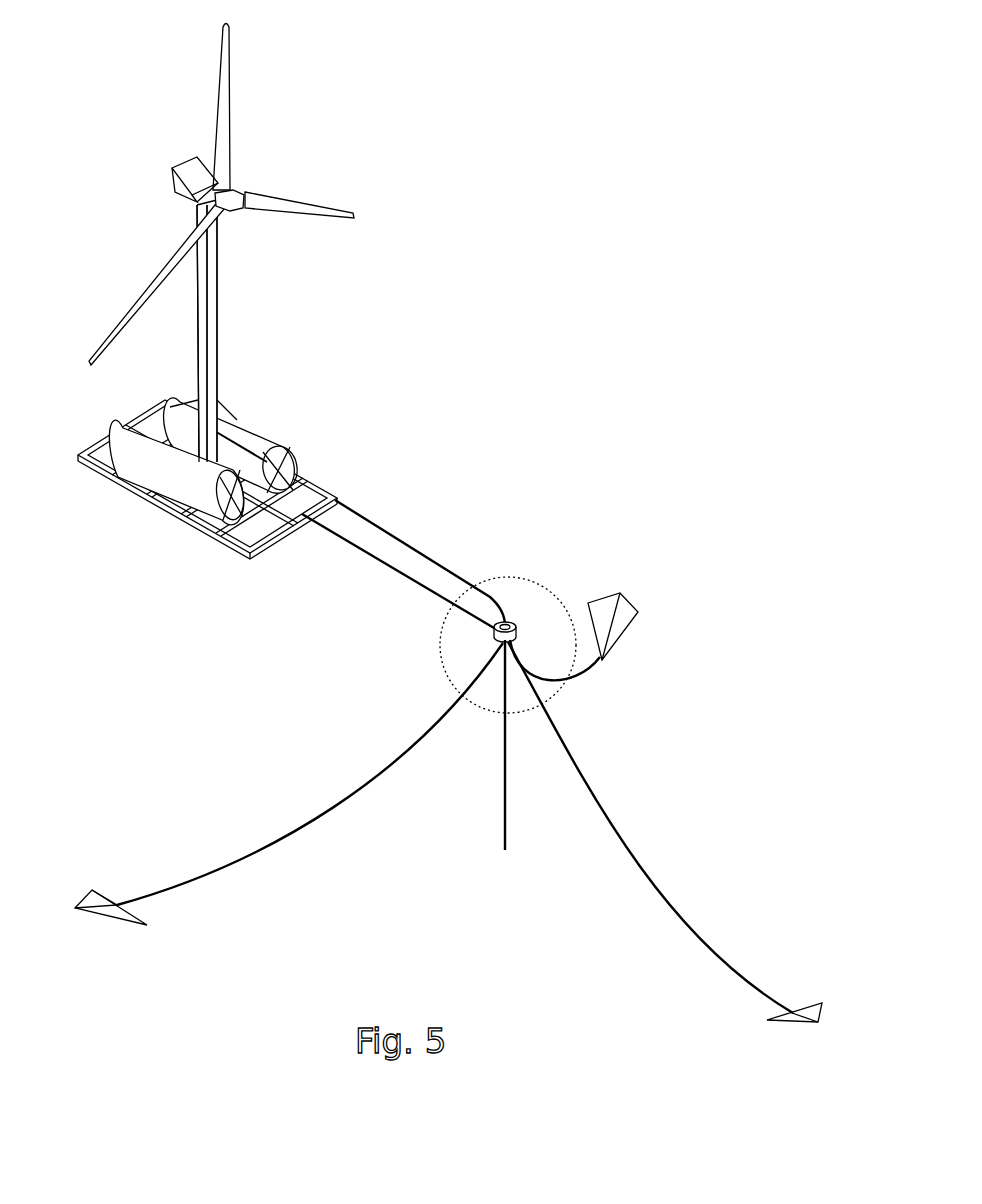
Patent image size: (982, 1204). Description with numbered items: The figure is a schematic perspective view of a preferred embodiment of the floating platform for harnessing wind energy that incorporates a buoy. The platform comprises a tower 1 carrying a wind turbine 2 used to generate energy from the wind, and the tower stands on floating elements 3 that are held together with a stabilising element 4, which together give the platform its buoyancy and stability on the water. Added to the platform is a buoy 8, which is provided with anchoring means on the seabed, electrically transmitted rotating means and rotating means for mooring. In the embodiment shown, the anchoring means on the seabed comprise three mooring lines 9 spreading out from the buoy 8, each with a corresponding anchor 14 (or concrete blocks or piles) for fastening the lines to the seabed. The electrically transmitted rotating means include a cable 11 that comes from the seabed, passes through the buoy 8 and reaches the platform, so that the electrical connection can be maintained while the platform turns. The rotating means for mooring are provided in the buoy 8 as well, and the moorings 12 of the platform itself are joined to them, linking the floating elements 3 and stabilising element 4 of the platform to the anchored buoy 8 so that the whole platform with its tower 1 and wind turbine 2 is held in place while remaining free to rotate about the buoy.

The tower 1 is at (213, 299).
The wind turbine 2 is at (172, 180).
The floating elements 3 is at (258, 440).
The stabilising element 4 is at (88, 438).
The buoy 8 is at (500, 643).
The mooring lines 9 is at (440, 723).
The cable 11 is at (387, 527).
The moorings 12 is at (392, 567).
The anchors 14 is at (620, 618).